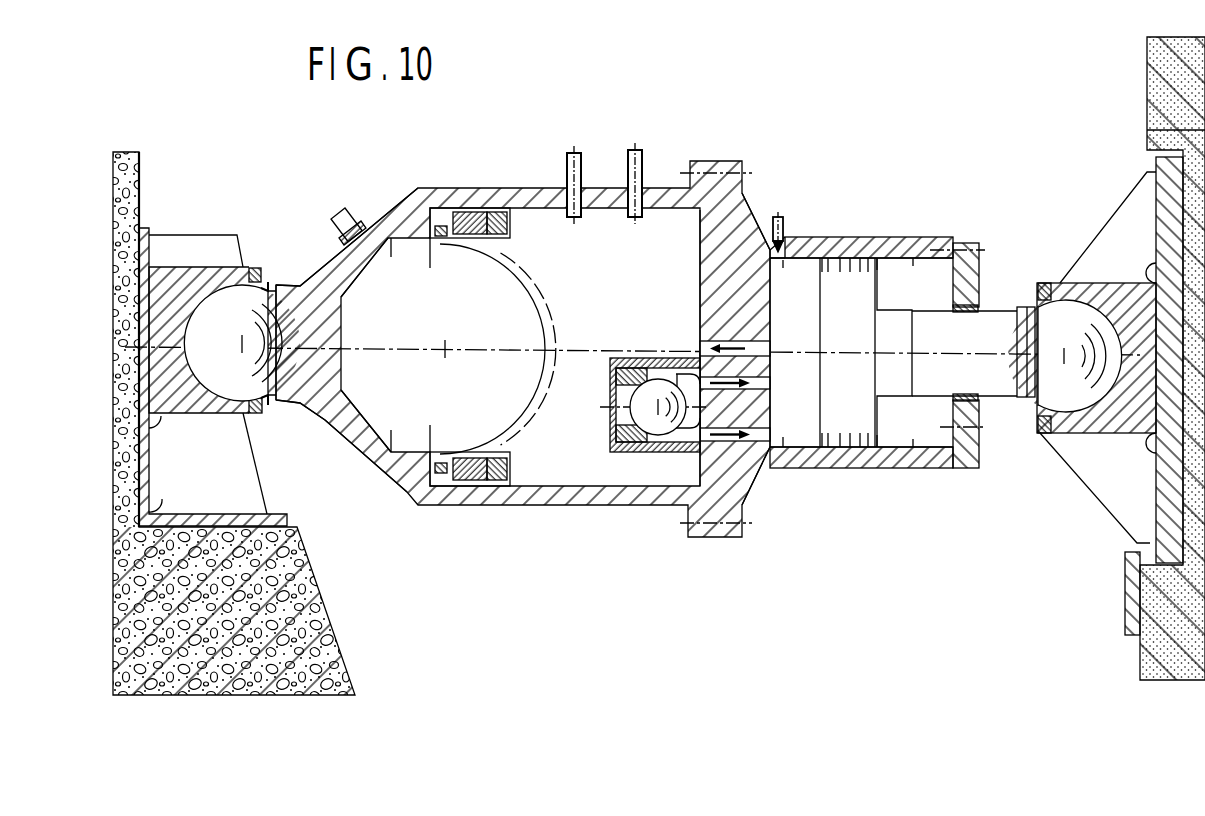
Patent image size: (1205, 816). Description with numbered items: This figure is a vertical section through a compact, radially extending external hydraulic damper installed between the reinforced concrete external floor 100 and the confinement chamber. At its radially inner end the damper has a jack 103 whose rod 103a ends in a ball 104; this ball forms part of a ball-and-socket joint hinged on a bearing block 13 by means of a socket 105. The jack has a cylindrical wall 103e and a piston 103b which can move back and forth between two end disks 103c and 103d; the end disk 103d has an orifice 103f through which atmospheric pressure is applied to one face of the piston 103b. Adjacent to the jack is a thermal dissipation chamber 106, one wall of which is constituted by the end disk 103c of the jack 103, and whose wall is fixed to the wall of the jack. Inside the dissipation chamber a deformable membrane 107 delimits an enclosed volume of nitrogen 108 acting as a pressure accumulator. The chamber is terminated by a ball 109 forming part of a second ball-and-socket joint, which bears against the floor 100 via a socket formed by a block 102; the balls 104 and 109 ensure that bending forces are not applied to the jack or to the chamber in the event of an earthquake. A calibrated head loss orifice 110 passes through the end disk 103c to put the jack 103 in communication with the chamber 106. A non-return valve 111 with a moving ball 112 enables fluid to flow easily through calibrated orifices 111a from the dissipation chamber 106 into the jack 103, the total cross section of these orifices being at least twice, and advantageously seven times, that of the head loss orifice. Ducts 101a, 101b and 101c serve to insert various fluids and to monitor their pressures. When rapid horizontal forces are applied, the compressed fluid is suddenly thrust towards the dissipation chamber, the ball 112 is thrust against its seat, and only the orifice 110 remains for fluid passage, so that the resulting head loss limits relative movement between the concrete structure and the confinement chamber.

The external floor 100 is at (134, 178).
The block 102 is at (172, 312).
The ball 109 is at (240, 316).
The duct 101b is at (344, 236).
The deformable membrane 107 is at (495, 208).
The duct 101a is at (645, 150).
The end disk 103c is at (740, 272).
The duct 101c is at (784, 224).
The cylindrical wall 103e is at (882, 248).
The end disk 103d is at (968, 272).
The machine frame 13 is at (1168, 83).
The calibrated head loss orifice 110 is at (700, 345).
The enclosed volume of nitrogen 108 is at (395, 393).
The thermal dissipation chamber 106 is at (557, 430).
The non-return valve 111 is at (610, 442).
The ball 112 is at (675, 398).
The calibrated orifices 111a is at (757, 441).
The piston 103b is at (836, 402).
The rod 103a is at (932, 382).
The orifice 103f is at (970, 432).
The ball 104 is at (1080, 382).
The socket 105 is at (1128, 397).
The jack 103 is at (808, 560).